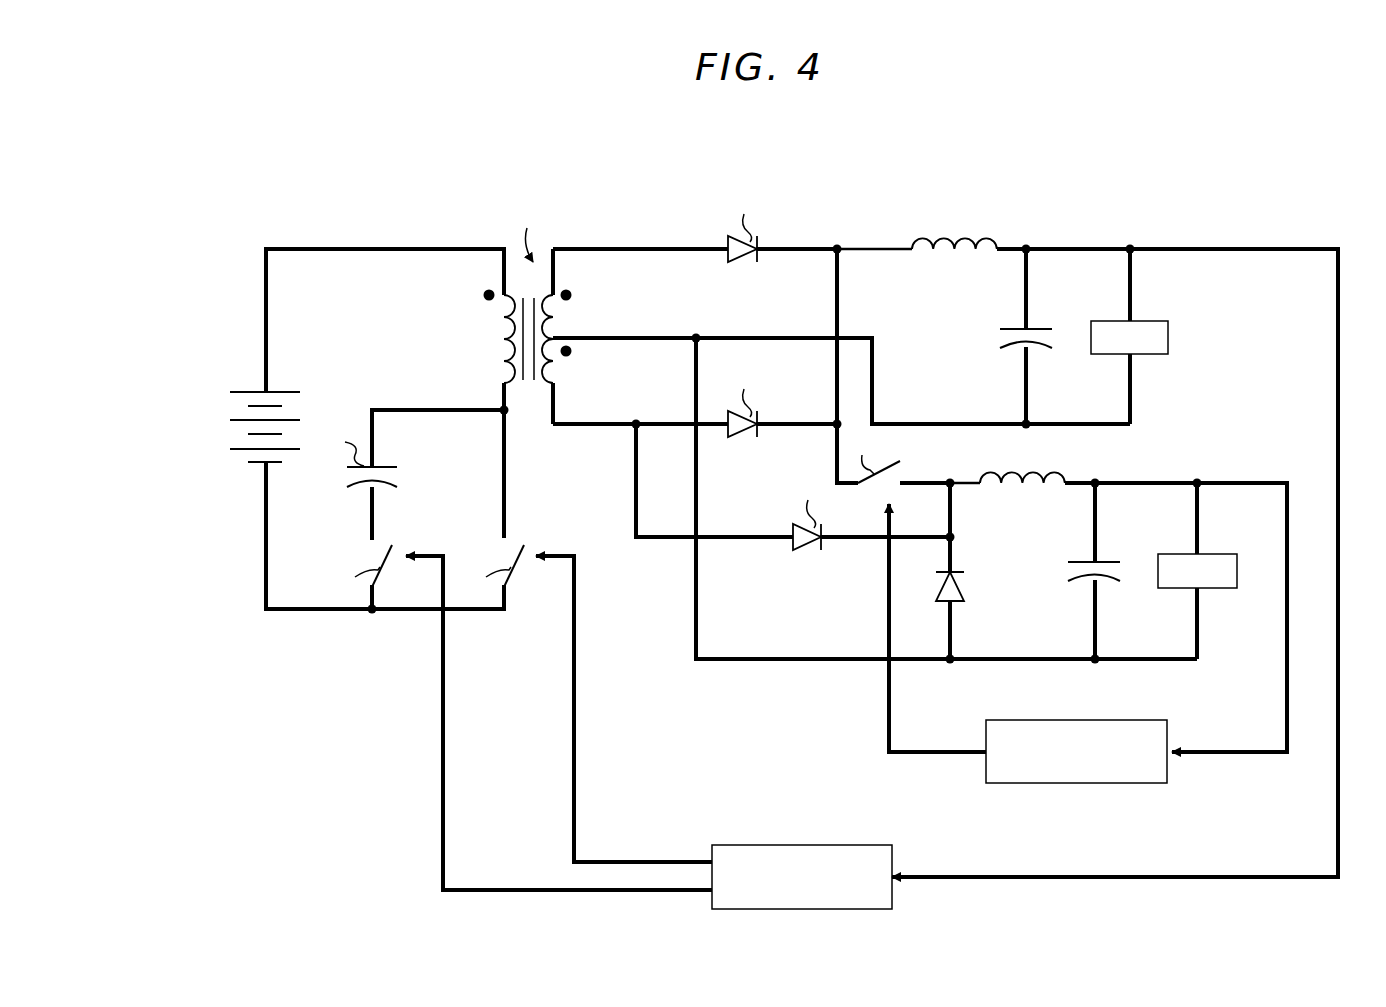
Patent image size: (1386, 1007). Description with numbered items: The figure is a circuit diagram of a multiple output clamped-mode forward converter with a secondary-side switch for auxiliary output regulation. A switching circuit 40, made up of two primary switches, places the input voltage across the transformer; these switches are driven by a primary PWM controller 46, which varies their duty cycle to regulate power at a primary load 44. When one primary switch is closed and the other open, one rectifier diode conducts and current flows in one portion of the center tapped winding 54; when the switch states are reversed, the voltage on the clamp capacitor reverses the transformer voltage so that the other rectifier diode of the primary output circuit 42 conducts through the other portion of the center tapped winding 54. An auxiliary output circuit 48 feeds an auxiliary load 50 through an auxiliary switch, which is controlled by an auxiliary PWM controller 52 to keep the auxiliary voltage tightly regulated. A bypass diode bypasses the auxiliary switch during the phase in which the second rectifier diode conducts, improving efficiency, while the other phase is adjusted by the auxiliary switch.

The switching circuit 40 is at (258, 186).
The primary output circuit 42 is at (982, 190).
The primary load 44 is at (1168, 338).
The primary PWM controller 46 is at (802, 845).
The auxiliary output circuit 48 is at (1193, 446).
The auxiliary load 50 is at (1222, 554).
The auxiliary PWM controller 52 is at (1078, 720).
The center tapped winding 54 is at (574, 321).